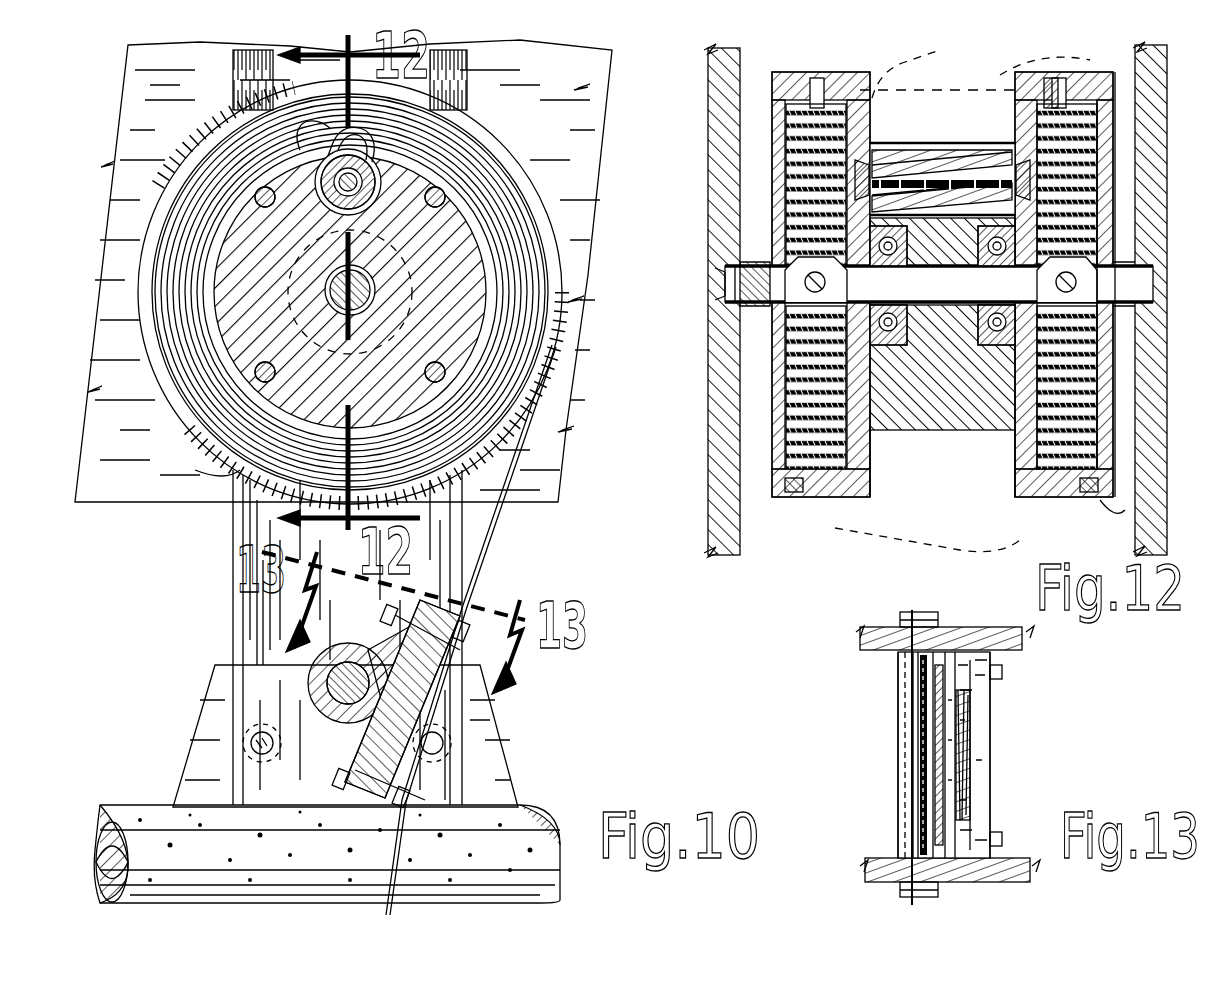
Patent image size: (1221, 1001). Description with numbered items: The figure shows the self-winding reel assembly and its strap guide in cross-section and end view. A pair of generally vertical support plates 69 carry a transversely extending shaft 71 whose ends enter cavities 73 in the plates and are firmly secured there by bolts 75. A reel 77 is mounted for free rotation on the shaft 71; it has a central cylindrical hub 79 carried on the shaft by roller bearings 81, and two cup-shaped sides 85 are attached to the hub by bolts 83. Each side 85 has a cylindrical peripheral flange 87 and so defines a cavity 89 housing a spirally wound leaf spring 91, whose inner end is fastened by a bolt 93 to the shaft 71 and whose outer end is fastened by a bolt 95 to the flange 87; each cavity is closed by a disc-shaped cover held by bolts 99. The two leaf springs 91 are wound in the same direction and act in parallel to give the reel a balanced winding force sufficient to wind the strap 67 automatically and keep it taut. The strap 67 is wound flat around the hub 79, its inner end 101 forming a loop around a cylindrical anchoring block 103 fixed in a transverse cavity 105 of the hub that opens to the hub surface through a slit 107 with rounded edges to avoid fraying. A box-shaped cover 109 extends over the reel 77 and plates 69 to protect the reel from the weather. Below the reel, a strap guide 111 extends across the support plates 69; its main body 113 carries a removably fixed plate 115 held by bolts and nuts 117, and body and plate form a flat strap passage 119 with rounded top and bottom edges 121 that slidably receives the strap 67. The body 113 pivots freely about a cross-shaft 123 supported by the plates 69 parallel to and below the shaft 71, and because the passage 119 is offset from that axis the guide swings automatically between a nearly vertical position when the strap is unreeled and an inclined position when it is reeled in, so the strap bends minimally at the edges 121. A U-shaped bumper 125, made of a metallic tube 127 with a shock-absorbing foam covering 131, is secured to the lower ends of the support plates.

In FIG. 10, the strap 67 is at (580, 310).
In FIG. 12, the strap 67 is at (962, 298).
In FIG. 10, the support plates 69 is at (100, 240).
In FIG. 12, the support plates 69 is at (745, 185).
In FIG. 13, the support plates 69 is at (1020, 640).
In FIG. 10, the shaft 71 is at (392, 285).
In FIG. 12, the shaft 71 is at (1120, 272).
In FIG. 12, the cavities 73 is at (740, 262).
In FIG. 12, the bolts 75 is at (725, 292).
In FIG. 10, the reel 77 is at (540, 178).
In FIG. 12, the reel 77 is at (1065, 505).
In FIG. 10, the hub 79 is at (555, 272).
In FIG. 12, the hub 79 is at (945, 420).
In FIG. 12, the roller bearings 81 is at (912, 185).
In FIG. 10, the bolts 83 is at (200, 296).
In FIG. 10, the cup-shaped sides 85 is at (125, 312).
In FIG. 12, the cup-shaped sides 85 is at (1005, 465).
In FIG. 12, the peripheral flange 87 is at (830, 488).
In FIG. 12, the cavity 89 is at (792, 495).
In FIG. 12, the leaf spring 91 is at (1135, 165).
In FIG. 12, the bolt 93 is at (1110, 200).
In FIG. 12, the bolt 95 is at (1050, 78).
In FIG. 12, the bolts 99 is at (1112, 488).
In FIG. 10, the inner end 101 is at (381, 172).
In FIG. 10, the anchoring block 103 is at (378, 158).
In FIG. 12, the anchoring block 103 is at (975, 200).
In FIG. 10, the transverse cavity 105 is at (320, 155).
In FIG. 12, the transverse cavity 105 is at (948, 180).
In FIG. 10, the slit 107 is at (255, 160).
In FIG. 12, the slit 107 is at (878, 175).
In FIG. 12, the cover 109 is at (708, 118).
In FIG. 10, the strap guide 111 is at (440, 700).
In FIG. 13, the strap guide 111 is at (998, 750).
In FIG. 10, the main body 113 is at (300, 695).
In FIG. 13, the main body 113 is at (900, 792).
In FIG. 10, the plate 115 is at (470, 708).
In FIG. 13, the plate 115 is at (1000, 800).
In FIG. 10, the bolts and nuts 117 is at (465, 610).
In FIG. 13, the bolts and nuts 117 is at (1002, 675).
In FIG. 10, the strap passage 119 is at (418, 790).
In FIG. 13, the strap passage 119 is at (970, 760).
In FIG. 10, the rounded edges 121 is at (290, 808).
In FIG. 13, the rounded edges 121 is at (920, 740).
In FIG. 10, the cross-shaft 123 is at (308, 668).
In FIG. 13, the cross-shaft 123 is at (900, 900).
In FIG. 10, the bumper 125 is at (545, 872).
In FIG. 10, the tube 127 is at (100, 840).
In FIG. 10, the covering 131 is at (120, 905).